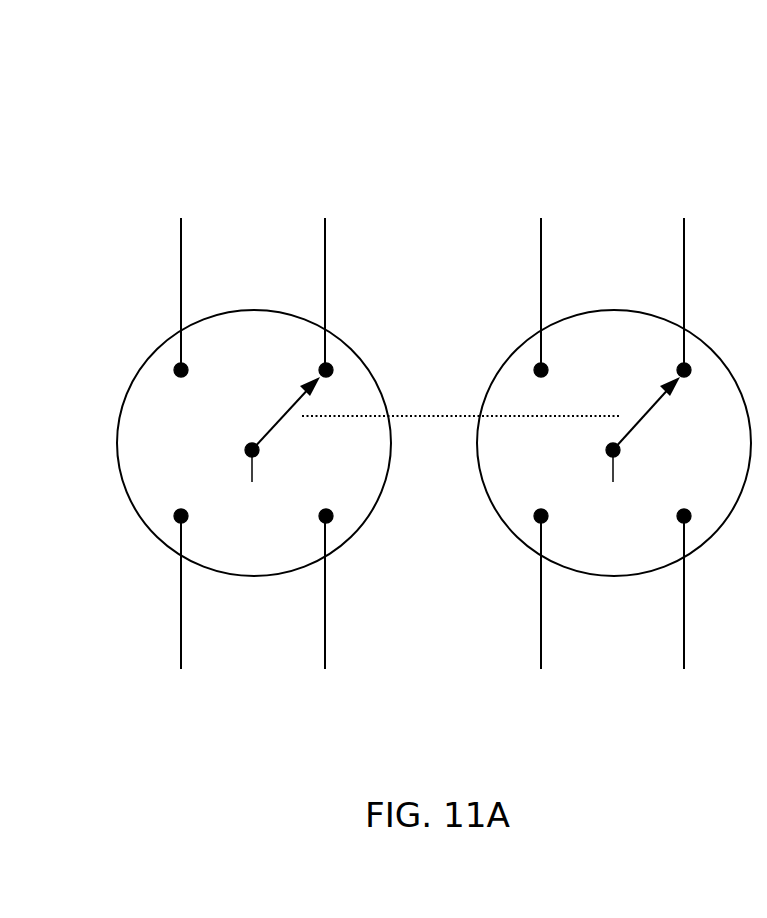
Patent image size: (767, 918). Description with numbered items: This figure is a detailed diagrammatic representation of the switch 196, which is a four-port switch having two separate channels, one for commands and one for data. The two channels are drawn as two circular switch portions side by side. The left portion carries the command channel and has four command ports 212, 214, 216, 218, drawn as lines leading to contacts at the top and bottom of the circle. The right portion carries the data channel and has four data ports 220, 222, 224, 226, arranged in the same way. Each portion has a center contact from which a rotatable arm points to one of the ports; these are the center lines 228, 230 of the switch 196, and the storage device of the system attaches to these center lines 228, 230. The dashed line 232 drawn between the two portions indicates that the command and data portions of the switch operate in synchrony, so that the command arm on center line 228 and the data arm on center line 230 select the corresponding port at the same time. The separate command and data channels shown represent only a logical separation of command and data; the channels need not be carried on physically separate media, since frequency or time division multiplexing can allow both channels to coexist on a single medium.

The switch 196 is at (443, 140).
The command port 212 is at (180, 269).
The command port 214 is at (322, 269).
The command port 216 is at (182, 619).
The command port 218 is at (321, 619).
The data port 220 is at (539, 269).
The data port 222 is at (689, 269).
The data port 224 is at (538, 619).
The data port 226 is at (689, 619).
The center line 228 is at (271, 458).
The center line 230 is at (631, 458).
The dashed line 232 is at (422, 416).